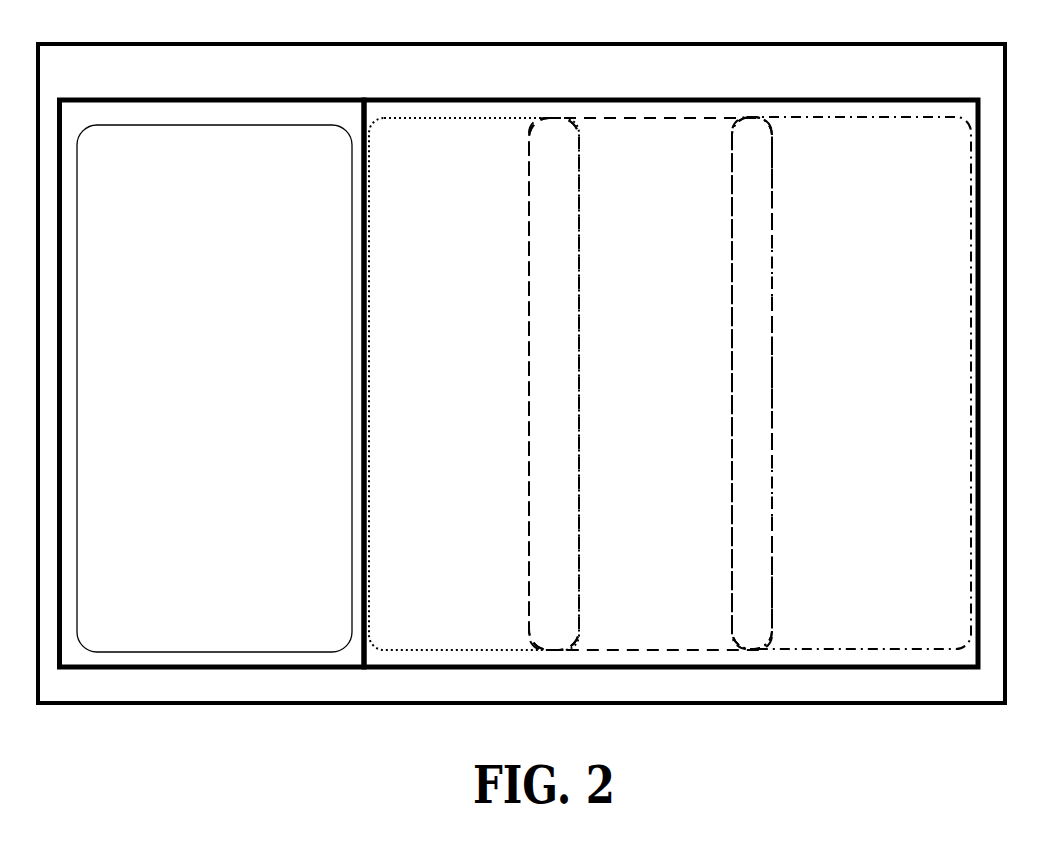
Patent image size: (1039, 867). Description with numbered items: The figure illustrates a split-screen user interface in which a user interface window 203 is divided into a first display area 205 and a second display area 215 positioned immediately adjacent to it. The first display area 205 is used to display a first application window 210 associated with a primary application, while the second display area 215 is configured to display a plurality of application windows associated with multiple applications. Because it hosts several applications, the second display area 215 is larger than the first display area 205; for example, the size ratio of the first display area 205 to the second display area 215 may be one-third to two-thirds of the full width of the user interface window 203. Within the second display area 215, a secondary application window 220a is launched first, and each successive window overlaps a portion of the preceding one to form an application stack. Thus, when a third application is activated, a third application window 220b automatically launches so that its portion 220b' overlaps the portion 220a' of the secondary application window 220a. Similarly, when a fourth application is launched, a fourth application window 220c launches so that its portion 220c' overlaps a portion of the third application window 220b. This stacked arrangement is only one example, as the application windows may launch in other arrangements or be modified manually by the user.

The user interface window 203 is at (405, 42).
The first display area 205 is at (225, 669).
The first application window 210 is at (196, 138).
The second display area 215 is at (620, 669).
The secondary application window 220a is at (474, 359).
The third application window 220b is at (650, 357).
The fourth application window 220c is at (851, 356).
The portion of application window 220a 220a' is at (534, 384).
The portion of application window 220b 220b' is at (650, 383).
The portion of application window 220c 220c' is at (776, 383).